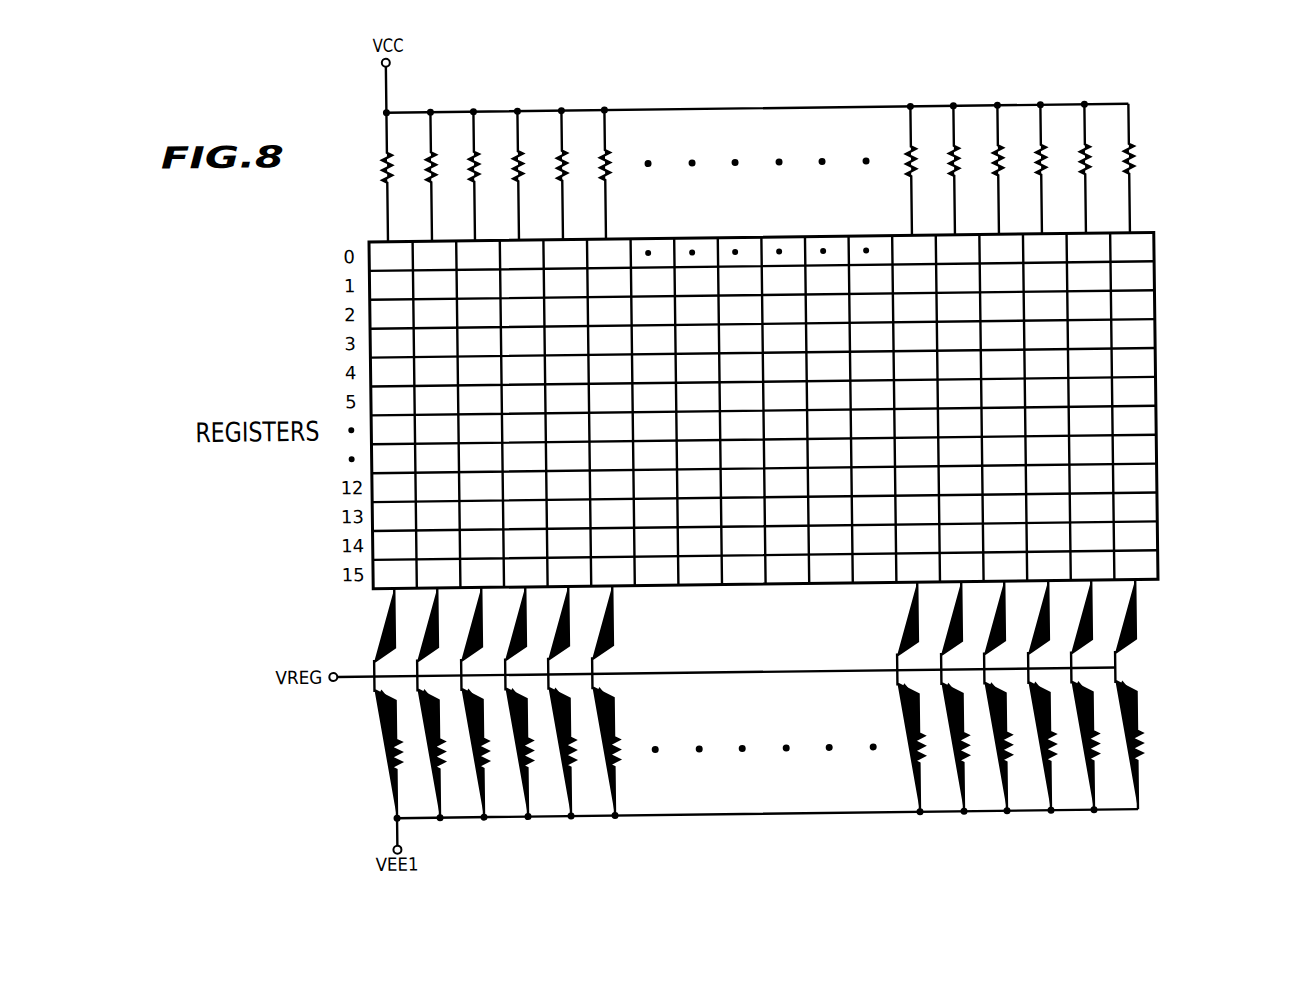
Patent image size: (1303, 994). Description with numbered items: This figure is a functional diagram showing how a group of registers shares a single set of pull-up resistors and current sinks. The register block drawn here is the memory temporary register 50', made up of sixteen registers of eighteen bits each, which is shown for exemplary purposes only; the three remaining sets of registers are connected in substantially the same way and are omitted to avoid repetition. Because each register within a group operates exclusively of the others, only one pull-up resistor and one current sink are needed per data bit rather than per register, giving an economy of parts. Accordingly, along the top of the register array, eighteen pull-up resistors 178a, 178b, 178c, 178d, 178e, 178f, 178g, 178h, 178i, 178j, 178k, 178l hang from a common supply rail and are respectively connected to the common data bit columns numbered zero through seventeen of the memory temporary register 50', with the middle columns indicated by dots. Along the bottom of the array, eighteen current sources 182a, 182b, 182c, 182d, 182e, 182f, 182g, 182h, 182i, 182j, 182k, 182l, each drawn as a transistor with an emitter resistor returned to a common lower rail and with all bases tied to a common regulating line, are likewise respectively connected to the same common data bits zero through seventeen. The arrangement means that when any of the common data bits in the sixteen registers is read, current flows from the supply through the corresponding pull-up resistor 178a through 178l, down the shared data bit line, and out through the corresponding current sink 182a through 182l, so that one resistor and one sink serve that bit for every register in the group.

The pull-up resistor 178a is at (390, 181).
The pull-up resistor 178b is at (434, 181).
The pull-up resistor 178c is at (477, 181).
The pull-up resistor 178d is at (521, 181).
The pull-up resistor 178e is at (565, 181).
The pull-up resistor 178f is at (608, 181).
The pull-up resistor 178g is at (910, 181).
The pull-up resistor 178h is at (953, 181).
The pull-up resistor 178i is at (997, 181).
The pull-up resistor 178j is at (1040, 181).
The pull-up resistor 178k is at (1084, 181).
The pull-up resistor 178l is at (1128, 181).
The current source 182a is at (386, 694).
The current source 182b is at (429, 694).
The current source 182c is at (473, 694).
The current source 182d is at (517, 694).
The current source 182e is at (560, 694).
The current source 182f is at (604, 694).
The current source 182g is at (906, 694).
The current source 182h is at (950, 694).
The current source 182i is at (993, 694).
The current source 182j is at (1037, 694).
The current source 182k is at (1080, 694).
The current source 182l is at (1124, 694).
The memory temporary register 50' is at (812, 410).